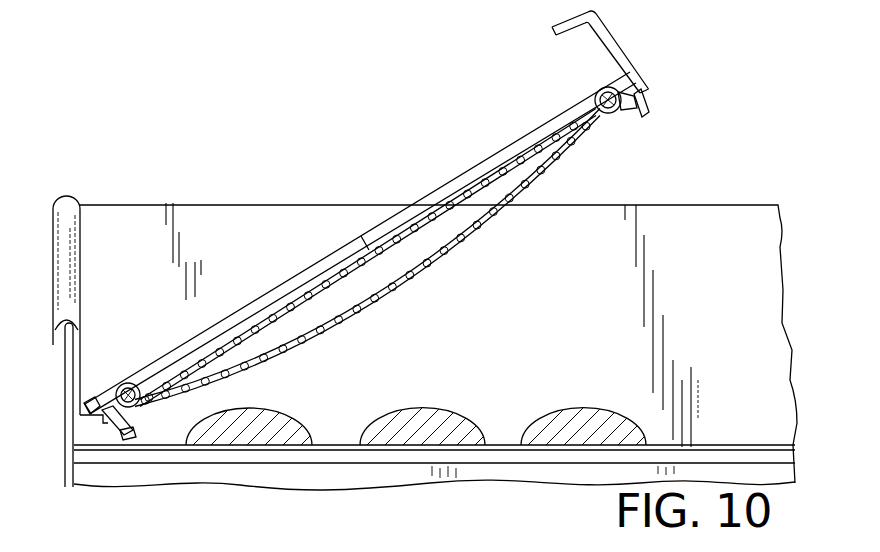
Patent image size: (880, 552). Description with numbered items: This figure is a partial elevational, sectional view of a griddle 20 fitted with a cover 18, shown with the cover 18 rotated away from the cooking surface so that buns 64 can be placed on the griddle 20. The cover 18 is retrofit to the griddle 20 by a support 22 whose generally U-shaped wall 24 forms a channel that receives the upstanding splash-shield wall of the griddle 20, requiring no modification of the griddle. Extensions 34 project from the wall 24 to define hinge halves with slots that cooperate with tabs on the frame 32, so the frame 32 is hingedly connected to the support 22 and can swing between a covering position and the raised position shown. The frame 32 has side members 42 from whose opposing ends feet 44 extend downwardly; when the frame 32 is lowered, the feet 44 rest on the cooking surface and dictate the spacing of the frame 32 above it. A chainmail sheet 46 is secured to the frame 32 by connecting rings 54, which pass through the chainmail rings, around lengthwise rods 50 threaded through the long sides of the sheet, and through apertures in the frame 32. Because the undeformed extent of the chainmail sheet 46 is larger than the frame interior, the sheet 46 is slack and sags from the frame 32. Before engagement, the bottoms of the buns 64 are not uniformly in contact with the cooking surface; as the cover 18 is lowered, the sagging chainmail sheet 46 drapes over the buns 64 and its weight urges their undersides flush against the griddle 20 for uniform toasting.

The cover 18 is at (654, 62).
The griddle 20 is at (803, 440).
The support 22 is at (88, 336).
The U-shaped wall 24 is at (80, 353).
The frame 32 is at (646, 100).
The extensions 34 is at (100, 432).
The side members 42 is at (628, 105).
The feet 44 is at (642, 110).
The chainmail sheet 46 is at (432, 264).
The rod 50 is at (604, 120).
The connecting rings 54 is at (600, 90).
The buns 64 is at (278, 416).